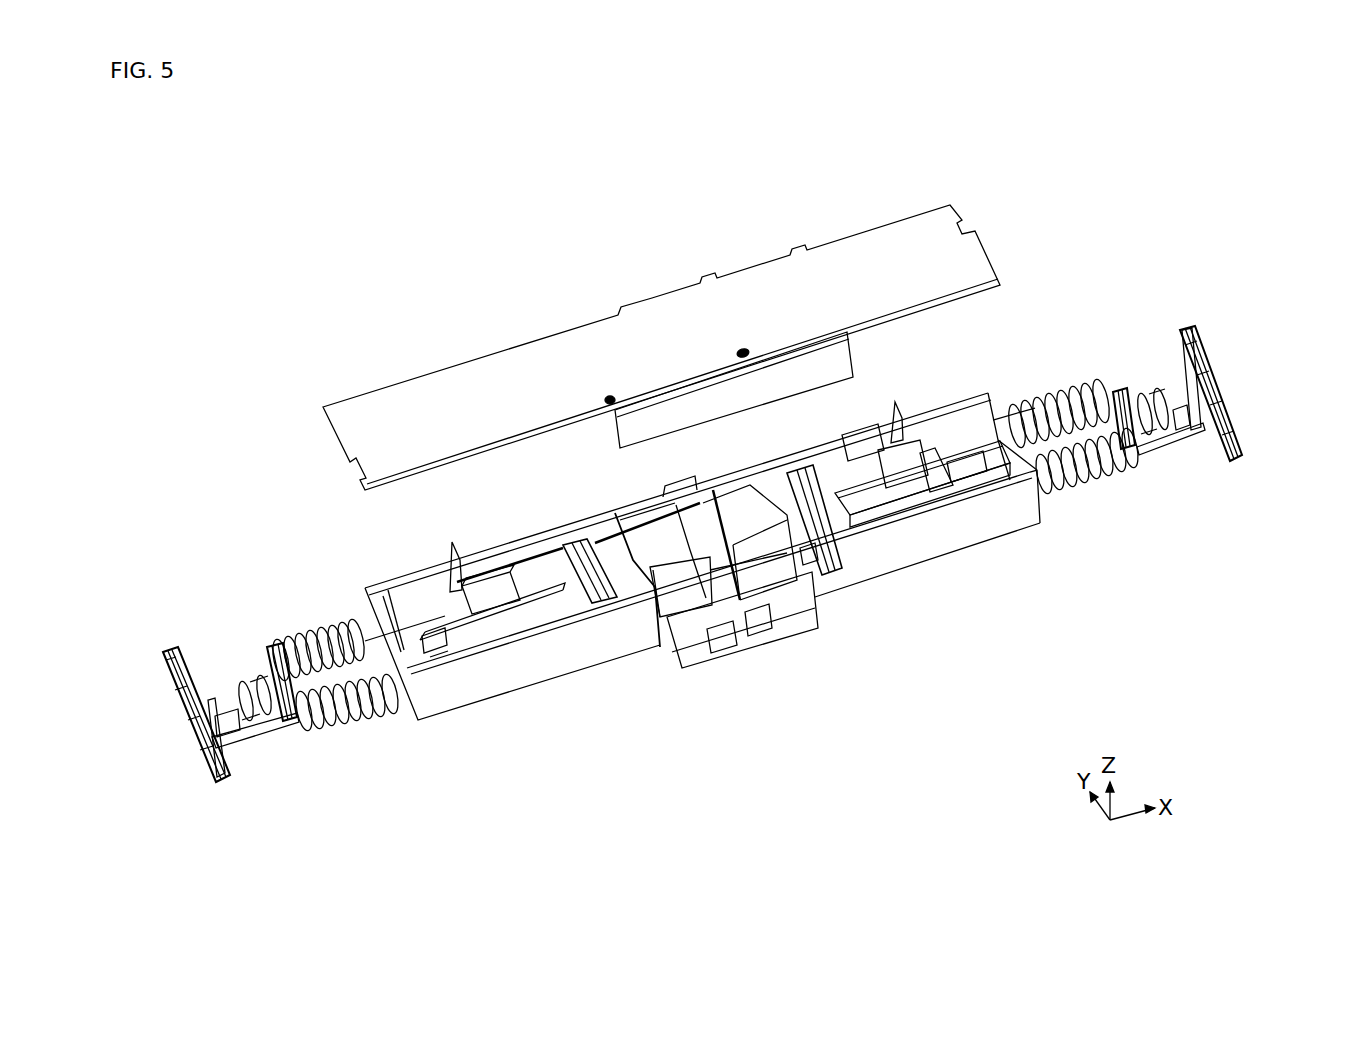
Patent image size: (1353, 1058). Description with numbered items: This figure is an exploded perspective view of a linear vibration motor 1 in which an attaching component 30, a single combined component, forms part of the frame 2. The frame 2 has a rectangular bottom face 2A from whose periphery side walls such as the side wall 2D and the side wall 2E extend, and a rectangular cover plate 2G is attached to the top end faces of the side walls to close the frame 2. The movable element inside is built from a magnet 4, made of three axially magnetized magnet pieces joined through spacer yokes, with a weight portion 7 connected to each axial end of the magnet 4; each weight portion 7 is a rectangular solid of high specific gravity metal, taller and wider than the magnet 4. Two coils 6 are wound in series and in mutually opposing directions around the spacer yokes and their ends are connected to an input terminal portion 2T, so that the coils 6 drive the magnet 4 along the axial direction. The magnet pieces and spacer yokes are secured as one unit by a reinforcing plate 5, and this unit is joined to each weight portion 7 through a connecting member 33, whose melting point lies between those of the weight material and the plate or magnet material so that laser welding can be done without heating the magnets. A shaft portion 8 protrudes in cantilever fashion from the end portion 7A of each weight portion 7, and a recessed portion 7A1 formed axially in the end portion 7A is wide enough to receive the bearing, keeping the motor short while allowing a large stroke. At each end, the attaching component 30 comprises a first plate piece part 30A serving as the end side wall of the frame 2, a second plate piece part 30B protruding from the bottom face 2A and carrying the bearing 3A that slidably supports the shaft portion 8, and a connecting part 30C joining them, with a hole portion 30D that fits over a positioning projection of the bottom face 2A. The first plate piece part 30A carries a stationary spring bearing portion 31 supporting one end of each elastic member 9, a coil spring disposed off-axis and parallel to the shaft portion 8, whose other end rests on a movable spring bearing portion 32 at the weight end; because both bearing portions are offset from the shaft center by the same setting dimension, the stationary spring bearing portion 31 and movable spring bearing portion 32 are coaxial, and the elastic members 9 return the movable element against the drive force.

The linear vibration motor 1 is at (515, 214).
The frame 2 is at (710, 581).
The bottom face 2A is at (400, 653).
The side wall 2D is at (928, 538).
The side wall 2E is at (532, 536).
The cover plate 2G is at (978, 258).
The input terminal portion 2T is at (713, 658).
The bearing 3A is at (244, 680).
The magnet 4 is at (613, 532).
The reinforcing plate 5 is at (795, 638).
The coil 6 is at (673, 612).
The weight portion 7 is at (555, 605).
The end portion 7A is at (455, 537).
The recessed portion 7A1 is at (491, 575).
The shaft portion 8 is at (440, 650).
The elastic member 9 is at (303, 630).
The attaching component 30 is at (719, 563).
The first plate piece part 30A is at (192, 715).
The second plate piece part 30B is at (290, 718).
The connecting part 30C is at (256, 745).
The hole portion 30D is at (225, 714).
The stationary spring bearing portion 31 is at (208, 700).
The movable spring bearing portion 32 is at (920, 453).
The connecting member 33 is at (575, 542).